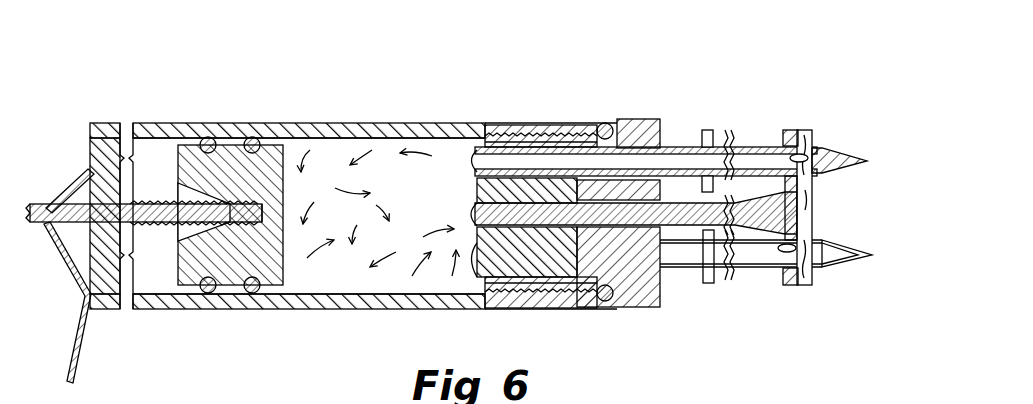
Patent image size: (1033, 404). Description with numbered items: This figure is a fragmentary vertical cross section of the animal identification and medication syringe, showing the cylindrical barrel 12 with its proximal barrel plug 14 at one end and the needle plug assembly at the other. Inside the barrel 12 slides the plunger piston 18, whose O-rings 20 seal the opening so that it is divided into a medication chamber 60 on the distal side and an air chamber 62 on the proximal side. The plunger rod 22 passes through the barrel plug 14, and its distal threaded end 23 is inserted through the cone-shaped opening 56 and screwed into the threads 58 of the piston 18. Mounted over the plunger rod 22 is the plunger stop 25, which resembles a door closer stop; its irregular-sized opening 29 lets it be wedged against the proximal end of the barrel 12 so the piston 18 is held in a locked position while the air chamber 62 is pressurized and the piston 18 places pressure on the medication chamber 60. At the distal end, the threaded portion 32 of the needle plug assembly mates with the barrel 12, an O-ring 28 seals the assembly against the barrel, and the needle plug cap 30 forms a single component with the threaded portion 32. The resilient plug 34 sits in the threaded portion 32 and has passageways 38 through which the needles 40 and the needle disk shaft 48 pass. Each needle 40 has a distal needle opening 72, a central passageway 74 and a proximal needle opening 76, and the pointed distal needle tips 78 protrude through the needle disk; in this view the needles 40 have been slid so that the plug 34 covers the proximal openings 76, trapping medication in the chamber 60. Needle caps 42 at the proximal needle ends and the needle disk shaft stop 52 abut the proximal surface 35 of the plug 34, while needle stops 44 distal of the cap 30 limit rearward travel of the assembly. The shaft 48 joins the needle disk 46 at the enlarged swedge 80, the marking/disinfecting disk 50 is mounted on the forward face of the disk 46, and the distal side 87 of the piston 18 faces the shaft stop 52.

The cylindrical barrel 12 is at (325, 128).
The proximal barrel plug 14 is at (110, 123).
The plunger piston 18 is at (282, 285).
The O-rings 20 is at (250, 137).
The plunger rod 22 is at (38, 205).
The distal threaded end 23 is at (149, 240).
The plunger stop 25 is at (76, 168).
The O-ring 28 is at (603, 122).
The irregular-sized opening 29 is at (43, 227).
The needle plug cap 30 is at (614, 134).
The threaded portion 32 is at (557, 128).
The resilient plug 34 is at (482, 133).
The proximal surface 35 is at (470, 190).
The needle plug passageways 38 is at (656, 148).
The needles 40 is at (757, 146).
The needle caps 42 is at (472, 172).
The needle stops 44 is at (708, 130).
The needle disk 46 is at (789, 129).
The needle disk shaft 48 is at (678, 204).
The marking/disinfecting disk 50 is at (807, 286).
The needle disk shaft stop 52 is at (470, 208).
The cone-shaped opening 56 is at (186, 230).
The threads 58 is at (252, 224).
The medication chamber 60 is at (338, 150).
The air chamber 62 is at (150, 123).
The distal needle opening 72 is at (806, 155).
The central passageway 74 is at (810, 176).
The proximal needle opening 76 is at (542, 97).
The needle 78 is at (853, 144).
The needle shaft swedge 80 is at (782, 210).
The distal side 87 is at (305, 138).